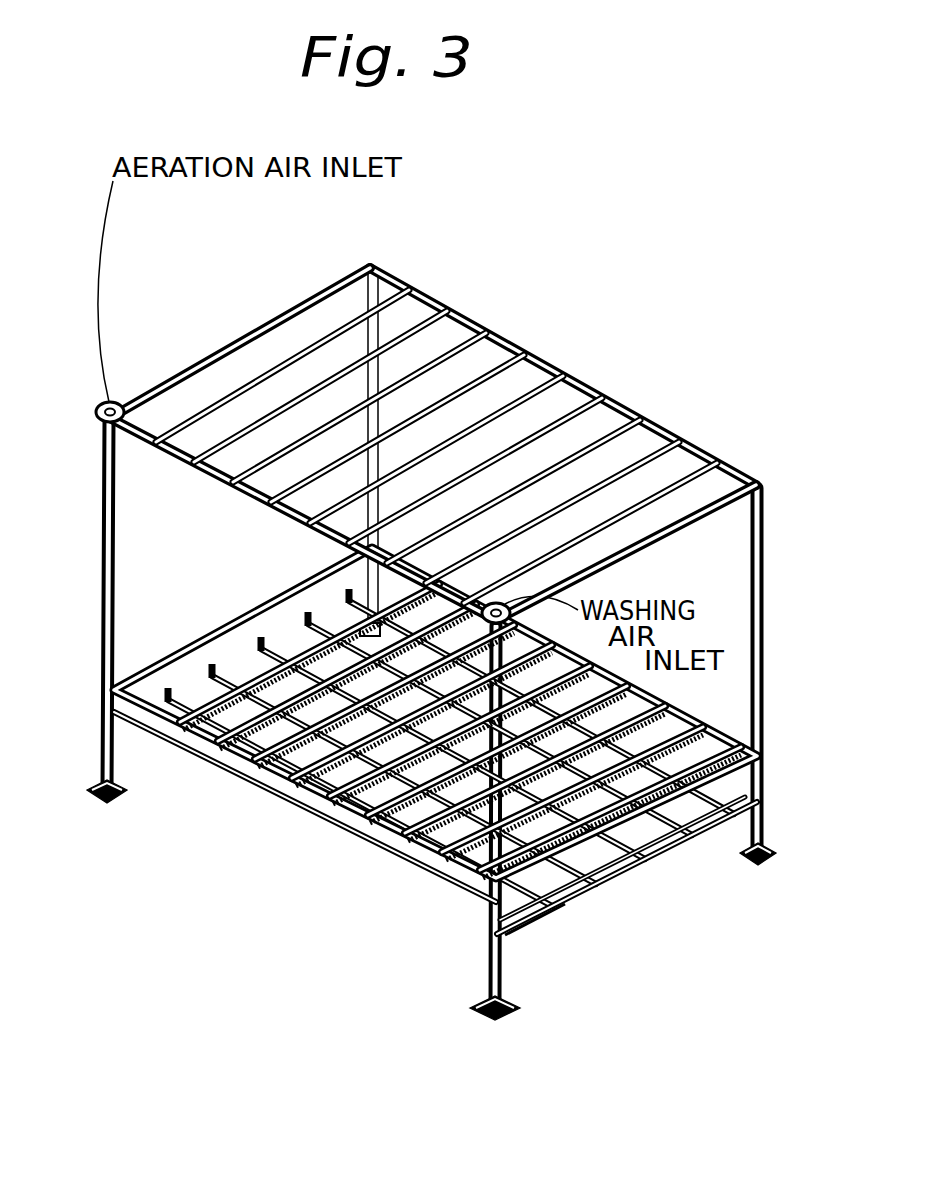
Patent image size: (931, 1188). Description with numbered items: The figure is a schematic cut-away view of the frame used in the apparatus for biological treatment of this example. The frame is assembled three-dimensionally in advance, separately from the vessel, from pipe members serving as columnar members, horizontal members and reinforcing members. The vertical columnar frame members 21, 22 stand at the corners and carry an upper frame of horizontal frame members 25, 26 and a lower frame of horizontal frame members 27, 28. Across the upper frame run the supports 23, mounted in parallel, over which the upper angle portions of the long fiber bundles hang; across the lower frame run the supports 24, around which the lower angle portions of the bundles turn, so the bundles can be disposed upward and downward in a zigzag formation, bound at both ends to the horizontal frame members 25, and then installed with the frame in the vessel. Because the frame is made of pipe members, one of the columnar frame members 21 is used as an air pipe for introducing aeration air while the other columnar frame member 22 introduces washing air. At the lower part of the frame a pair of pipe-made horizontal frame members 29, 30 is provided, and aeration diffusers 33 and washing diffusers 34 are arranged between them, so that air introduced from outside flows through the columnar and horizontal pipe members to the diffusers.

The columnar frame member 21 is at (102, 542).
The columnar frame member 22 is at (364, 290).
The support 23 is at (470, 340).
The support 24 is at (216, 744).
The horizontal frame member 25 is at (198, 372).
The horizontal frame member 26 is at (133, 447).
The horizontal frame member 27 is at (190, 646).
The horizontal frame member 28 is at (132, 720).
The pipe-made horizontal frame member 29 is at (763, 806).
The pipe-made horizontal frame member 30 is at (265, 640).
The aeration diffuser 33 is at (541, 921).
The washing diffuser 34 is at (584, 888).